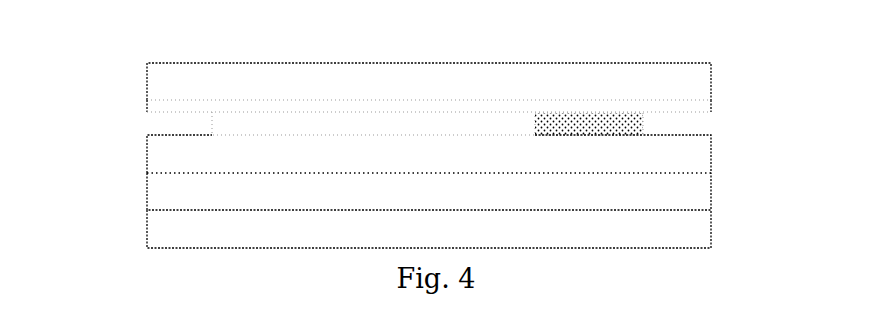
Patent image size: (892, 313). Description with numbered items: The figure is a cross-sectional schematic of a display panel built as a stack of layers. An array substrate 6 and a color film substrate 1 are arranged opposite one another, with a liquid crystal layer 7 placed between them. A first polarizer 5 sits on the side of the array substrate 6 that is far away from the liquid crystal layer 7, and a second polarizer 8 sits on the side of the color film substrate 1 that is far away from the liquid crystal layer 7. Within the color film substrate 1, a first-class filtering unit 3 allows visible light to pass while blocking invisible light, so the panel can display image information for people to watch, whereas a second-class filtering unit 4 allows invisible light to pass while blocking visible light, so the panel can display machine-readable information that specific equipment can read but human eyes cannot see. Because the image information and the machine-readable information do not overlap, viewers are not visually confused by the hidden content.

The color film substrate 1 is at (147, 108).
The first-class filtering unit 3 is at (353, 122).
The second-class filtering unit 4 is at (599, 115).
The first polarizer 5 is at (712, 235).
The array substrate 6 is at (147, 197).
The liquid crystal layer 7 is at (712, 153).
The second polarizer 8 is at (712, 88).